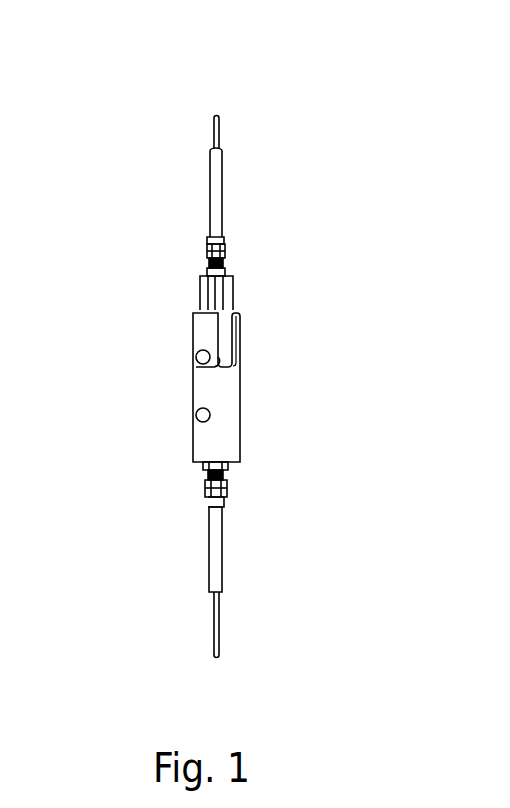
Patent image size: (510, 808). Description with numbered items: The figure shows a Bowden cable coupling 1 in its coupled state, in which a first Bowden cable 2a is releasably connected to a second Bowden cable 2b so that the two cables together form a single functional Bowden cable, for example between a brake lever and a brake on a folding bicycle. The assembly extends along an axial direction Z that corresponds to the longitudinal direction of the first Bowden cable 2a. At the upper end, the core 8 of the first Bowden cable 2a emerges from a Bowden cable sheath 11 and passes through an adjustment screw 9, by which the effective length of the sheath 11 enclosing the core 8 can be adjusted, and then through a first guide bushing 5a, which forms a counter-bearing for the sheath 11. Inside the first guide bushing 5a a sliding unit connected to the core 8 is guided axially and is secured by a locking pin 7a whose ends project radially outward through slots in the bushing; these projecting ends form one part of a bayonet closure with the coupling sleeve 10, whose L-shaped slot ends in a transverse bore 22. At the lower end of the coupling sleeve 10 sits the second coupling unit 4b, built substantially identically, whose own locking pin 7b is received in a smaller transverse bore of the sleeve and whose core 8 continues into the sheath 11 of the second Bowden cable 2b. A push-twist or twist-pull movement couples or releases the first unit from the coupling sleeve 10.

The Bowden cable coupling 1 is at (92, 202).
The first Bowden cable 2a is at (235, 85).
The second Bowden cable 2b is at (187, 623).
The core 8 is at (215, 137).
The Bowden cable sheath 11 is at (215, 202).
The adjustment screw 9 is at (217, 247).
The first guide bushing 5a is at (217, 297).
The coupling sleeve 10 is at (203, 388).
The locking pin 7a is at (205, 358).
The locking pin 7b is at (205, 415).
The second coupling unit 4b is at (237, 468).
The transverse bore 22 is at (217, 488).
The axial direction Z is at (50, 275).